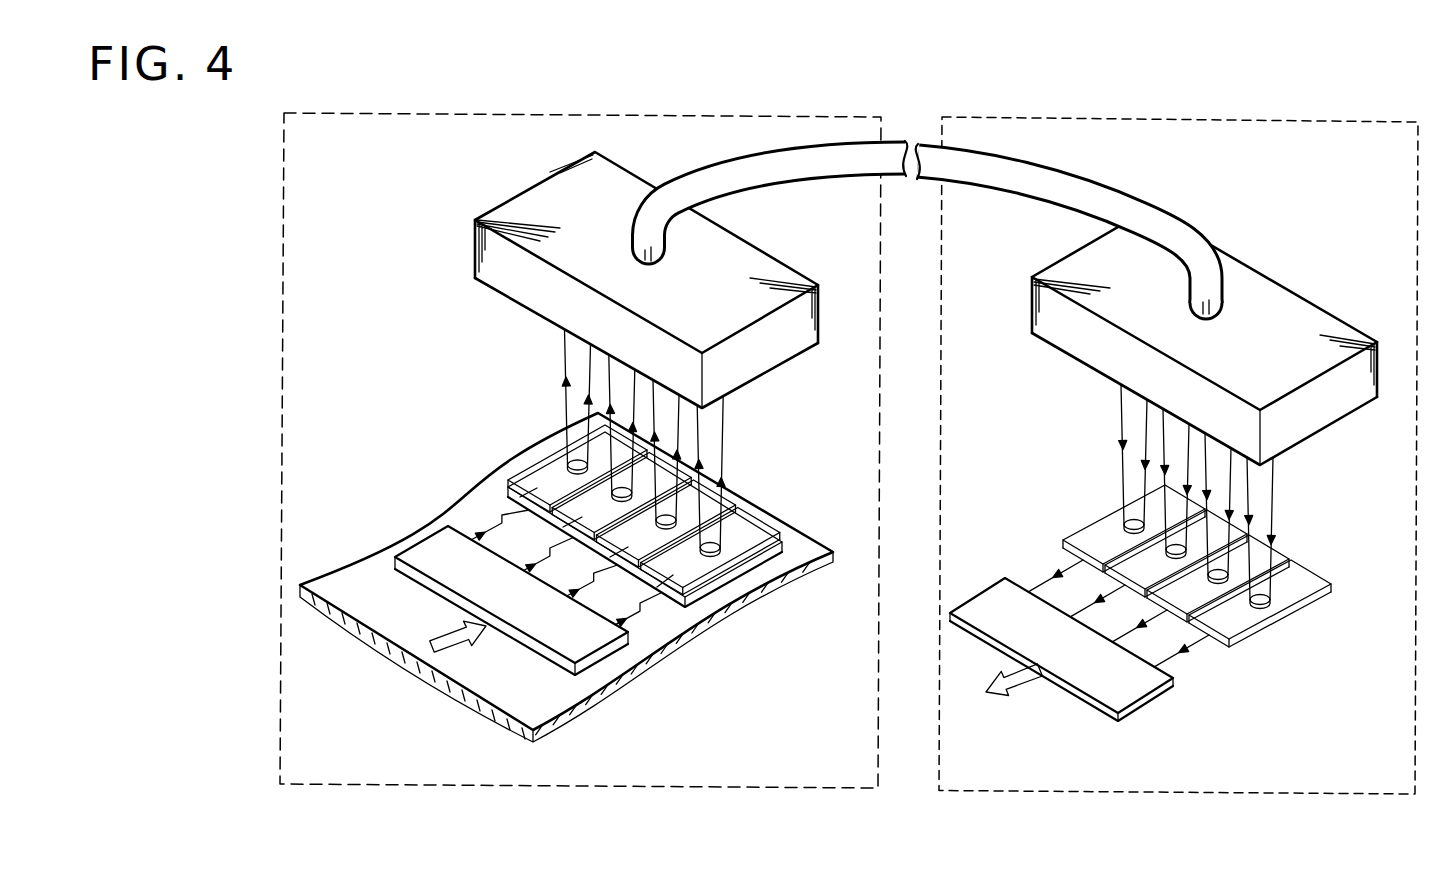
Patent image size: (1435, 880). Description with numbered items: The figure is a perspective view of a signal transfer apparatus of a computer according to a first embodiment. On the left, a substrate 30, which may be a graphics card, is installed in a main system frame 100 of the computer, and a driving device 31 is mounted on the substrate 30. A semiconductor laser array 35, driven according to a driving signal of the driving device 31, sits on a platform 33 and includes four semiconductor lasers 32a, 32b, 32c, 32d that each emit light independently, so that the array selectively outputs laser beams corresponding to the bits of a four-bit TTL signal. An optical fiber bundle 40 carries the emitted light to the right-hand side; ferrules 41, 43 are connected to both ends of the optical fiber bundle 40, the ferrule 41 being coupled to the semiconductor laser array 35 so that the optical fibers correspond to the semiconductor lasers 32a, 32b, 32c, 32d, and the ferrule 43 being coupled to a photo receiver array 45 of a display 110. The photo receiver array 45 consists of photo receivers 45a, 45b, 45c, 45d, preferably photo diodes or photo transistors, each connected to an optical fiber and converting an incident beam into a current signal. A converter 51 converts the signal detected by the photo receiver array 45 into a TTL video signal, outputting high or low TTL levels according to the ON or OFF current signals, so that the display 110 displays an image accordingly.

The substrate 30 is at (448, 497).
The driving device 31 is at (418, 538).
The semiconductor laser 32a is at (763, 520).
The semiconductor laser 32b is at (713, 500).
The semiconductor laser 32c is at (668, 472).
The semiconductor laser 32d is at (590, 443).
The transistor array platform 33 is at (787, 540).
The semiconductor laser array 35 is at (518, 468).
The optical fiber bundle 40 is at (1110, 202).
The ferrule 41 is at (477, 248).
The ferrule 43 is at (1310, 312).
The photo receiver array 45 is at (1215, 527).
The photo receiver 45a is at (1302, 570).
The photo receiver 45b is at (1260, 545).
The photo receiver 45c is at (1230, 517).
The photo receiver 45d is at (1120, 517).
The converter 51 is at (1143, 692).
The main system frame 100 is at (440, 787).
The display 110 is at (1185, 792).